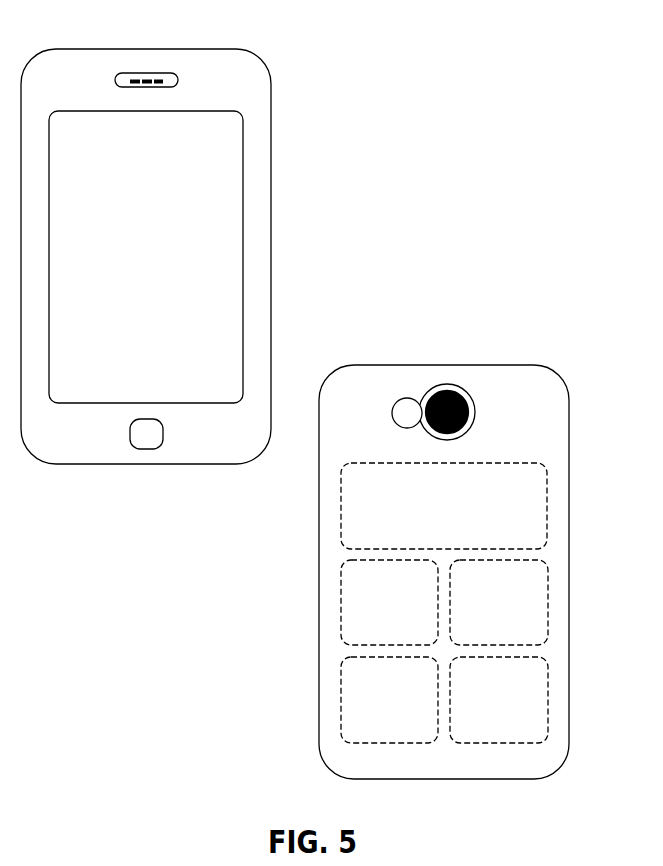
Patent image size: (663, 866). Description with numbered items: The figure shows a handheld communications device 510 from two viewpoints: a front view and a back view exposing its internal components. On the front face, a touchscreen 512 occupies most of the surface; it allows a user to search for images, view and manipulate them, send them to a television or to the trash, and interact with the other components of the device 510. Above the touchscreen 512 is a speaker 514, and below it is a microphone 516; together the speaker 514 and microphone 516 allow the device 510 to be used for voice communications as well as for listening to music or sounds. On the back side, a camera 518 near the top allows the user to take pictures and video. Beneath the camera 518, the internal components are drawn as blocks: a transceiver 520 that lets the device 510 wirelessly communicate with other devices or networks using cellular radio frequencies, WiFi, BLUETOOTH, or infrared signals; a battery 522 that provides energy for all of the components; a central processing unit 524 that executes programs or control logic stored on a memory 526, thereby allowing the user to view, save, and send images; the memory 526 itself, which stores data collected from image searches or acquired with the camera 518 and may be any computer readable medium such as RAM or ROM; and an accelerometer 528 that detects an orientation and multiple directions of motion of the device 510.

The handheld communications device 510 is at (298, 420).
The touchscreen 512 is at (202, 244).
The speaker 514 is at (171, 52).
The microphone 516 is at (180, 459).
The camera 518 is at (416, 387).
The transceiver 520 is at (397, 506).
The battery 522 is at (343, 602).
The central processing unit (CPU) 524 is at (343, 700).
The memory 526 is at (539, 689).
The accelerometer 528 is at (539, 592).